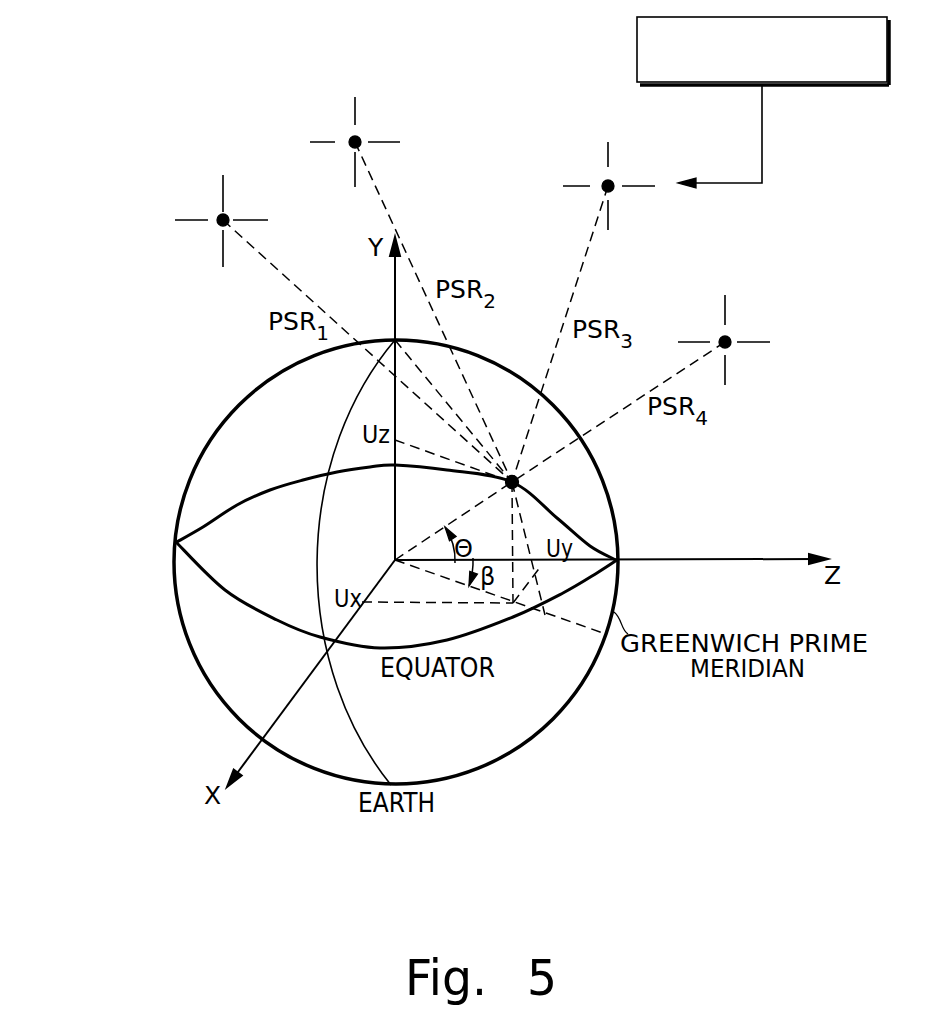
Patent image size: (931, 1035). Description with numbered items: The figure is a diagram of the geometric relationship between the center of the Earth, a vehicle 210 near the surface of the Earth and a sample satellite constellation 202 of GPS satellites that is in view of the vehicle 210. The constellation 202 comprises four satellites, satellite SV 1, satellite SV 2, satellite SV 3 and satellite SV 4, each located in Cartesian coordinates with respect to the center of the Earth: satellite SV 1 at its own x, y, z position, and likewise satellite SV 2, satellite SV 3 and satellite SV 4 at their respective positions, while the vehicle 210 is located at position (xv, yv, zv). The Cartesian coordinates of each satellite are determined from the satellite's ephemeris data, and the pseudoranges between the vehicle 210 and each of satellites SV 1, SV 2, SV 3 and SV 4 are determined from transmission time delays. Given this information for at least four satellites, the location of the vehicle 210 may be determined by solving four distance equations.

The satellite constellation 202 is at (487, 73).
The vehicle 210 is at (512, 482).
The GPS satellite SV1 1 is at (230, 215).
The GPS satellite SV2 2 is at (360, 137).
The GPS satellite SV3 3 is at (612, 180).
The GPS satellite SV4 4 is at (730, 337).